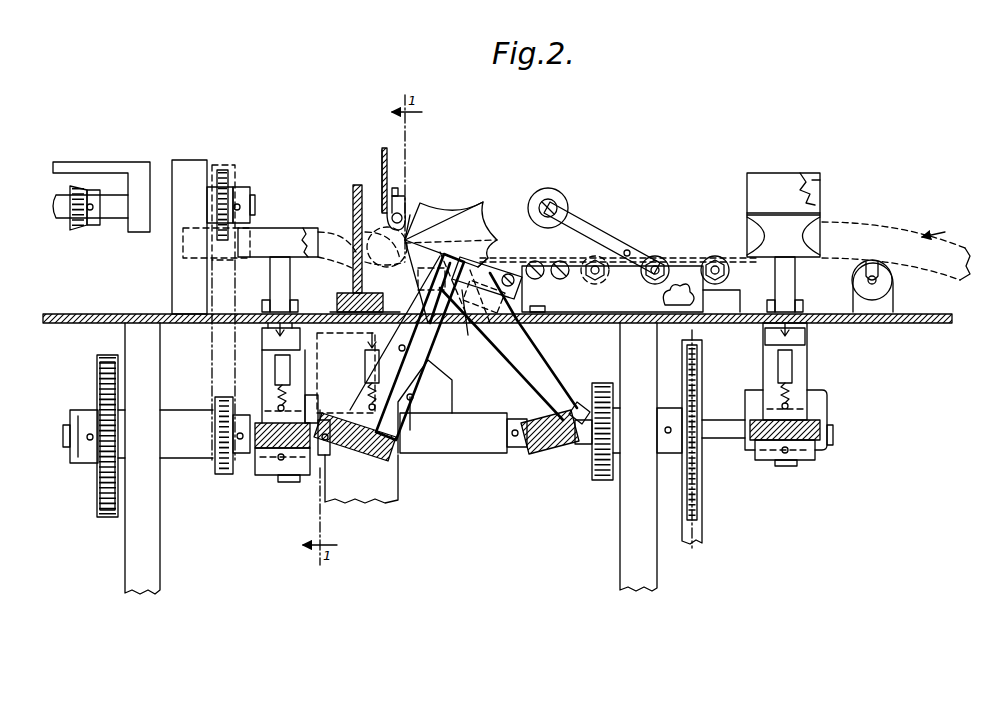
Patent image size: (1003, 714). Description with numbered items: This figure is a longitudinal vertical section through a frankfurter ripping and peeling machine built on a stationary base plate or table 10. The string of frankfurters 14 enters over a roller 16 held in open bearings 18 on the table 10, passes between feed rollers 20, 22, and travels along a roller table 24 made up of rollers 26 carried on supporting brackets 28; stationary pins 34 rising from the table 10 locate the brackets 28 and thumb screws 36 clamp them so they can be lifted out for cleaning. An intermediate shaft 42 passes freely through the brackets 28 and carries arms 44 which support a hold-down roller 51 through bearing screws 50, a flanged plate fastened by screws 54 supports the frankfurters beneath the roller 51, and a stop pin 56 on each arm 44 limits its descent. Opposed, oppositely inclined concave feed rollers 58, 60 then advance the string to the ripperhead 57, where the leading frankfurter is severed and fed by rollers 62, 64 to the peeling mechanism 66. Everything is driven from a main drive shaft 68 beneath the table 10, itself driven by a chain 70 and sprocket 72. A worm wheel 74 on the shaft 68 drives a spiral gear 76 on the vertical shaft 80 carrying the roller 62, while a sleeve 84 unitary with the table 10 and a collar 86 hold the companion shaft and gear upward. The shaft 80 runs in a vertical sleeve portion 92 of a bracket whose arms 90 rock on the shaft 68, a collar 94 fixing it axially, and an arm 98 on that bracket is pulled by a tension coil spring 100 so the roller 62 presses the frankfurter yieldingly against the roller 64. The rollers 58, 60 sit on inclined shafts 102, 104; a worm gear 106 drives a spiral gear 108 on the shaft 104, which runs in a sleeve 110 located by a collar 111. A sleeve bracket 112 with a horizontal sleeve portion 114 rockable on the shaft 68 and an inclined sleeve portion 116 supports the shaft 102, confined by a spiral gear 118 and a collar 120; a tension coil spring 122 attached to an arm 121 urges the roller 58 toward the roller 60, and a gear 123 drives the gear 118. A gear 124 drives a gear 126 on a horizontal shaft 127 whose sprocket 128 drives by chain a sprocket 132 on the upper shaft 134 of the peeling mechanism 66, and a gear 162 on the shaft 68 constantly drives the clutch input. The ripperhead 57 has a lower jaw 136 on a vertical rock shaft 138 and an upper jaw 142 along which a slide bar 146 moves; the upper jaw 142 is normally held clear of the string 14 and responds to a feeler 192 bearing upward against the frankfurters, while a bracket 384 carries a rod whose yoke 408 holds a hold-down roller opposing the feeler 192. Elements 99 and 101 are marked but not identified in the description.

The base plate or table 10 is at (915, 324).
The string of frankfurters 14 is at (332, 232).
The roller 16 is at (873, 262).
The open bearings 18 is at (890, 300).
The feed roller 20 is at (745, 184).
The feed roller 22 is at (808, 172).
The roller table 24 is at (682, 256).
The rollers 26 is at (731, 270).
The supporting brackets 28 is at (708, 258).
The stationary pins 34 is at (542, 306).
The thumb screws 36 is at (694, 298).
The intermediate shaft 42 is at (648, 282).
The arms 44 is at (575, 212).
The bearing screws 50 is at (551, 205).
The hold-down roller 51 is at (543, 200).
The screws 54 is at (560, 261).
The stop pin 56 is at (631, 251).
The ripperhead 57 is at (350, 190).
The concave feed roller 58 is at (438, 212).
The concave feed roller 60 is at (485, 212).
The feed roller 62 is at (262, 228).
The feed roller 64 is at (305, 228).
The peeling mechanism 66 is at (214, 158).
The main drive shaft 68 is at (65, 440).
The chain 70 is at (703, 535).
The sprocket 72 is at (698, 485).
The worm wheel 74 is at (262, 465).
The spiral gear 76 is at (296, 450).
The vertical shaft 80 is at (270, 270).
The sleeve 84 is at (262, 333).
The collar 86 is at (265, 302).
The arms 90 is at (262, 395).
The vertical sleeve portion 92 is at (262, 365).
The collar 94 is at (264, 350).
The arm 98 is at (278, 405).
The guide line 99 is at (760, 176).
The tension coil spring 100 is at (287, 369).
The block face 101 is at (819, 181).
The inclined shaft 102 is at (420, 288).
The inclined shaft 104 is at (462, 292).
The worm gear 106 is at (554, 455).
The spiral gear 108 is at (578, 404).
The sleeve 110 is at (522, 344).
The collar 111 is at (463, 322).
The sleeve bracket 112 is at (457, 392).
The horizontal sleeve portion 114 is at (466, 454).
The inclined sleeve portion 116 is at (365, 390).
The spiral gear 118 is at (398, 441).
The collar 120 is at (418, 355).
The arm 121 is at (405, 402).
The tension coil spring 122 is at (376, 392).
The gear 123 is at (361, 479).
The gear 124 is at (97, 506).
The gear 126 is at (99, 390).
The horizontal shaft 127 is at (74, 422).
The sprocket 128 is at (216, 447).
The sprocket 132 is at (229, 176).
The upper shaft 134 is at (116, 214).
The lower jaw 136 is at (336, 300).
The vertical rock shaft 138 is at (207, 285).
The upper jaw 142 is at (387, 247).
The slide bar 146 is at (360, 183).
The gear 162 is at (602, 482).
The feeler 192 is at (412, 274).
The bracket 384 is at (381, 150).
The yoke 408 is at (412, 214).